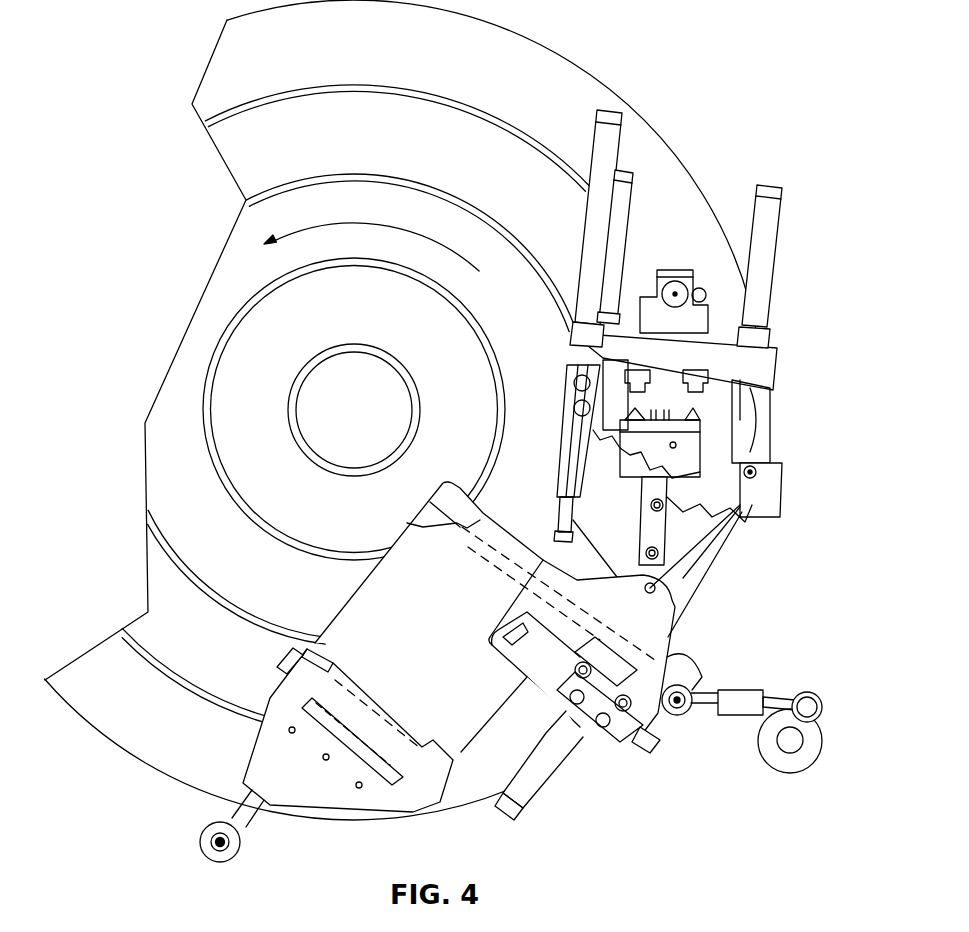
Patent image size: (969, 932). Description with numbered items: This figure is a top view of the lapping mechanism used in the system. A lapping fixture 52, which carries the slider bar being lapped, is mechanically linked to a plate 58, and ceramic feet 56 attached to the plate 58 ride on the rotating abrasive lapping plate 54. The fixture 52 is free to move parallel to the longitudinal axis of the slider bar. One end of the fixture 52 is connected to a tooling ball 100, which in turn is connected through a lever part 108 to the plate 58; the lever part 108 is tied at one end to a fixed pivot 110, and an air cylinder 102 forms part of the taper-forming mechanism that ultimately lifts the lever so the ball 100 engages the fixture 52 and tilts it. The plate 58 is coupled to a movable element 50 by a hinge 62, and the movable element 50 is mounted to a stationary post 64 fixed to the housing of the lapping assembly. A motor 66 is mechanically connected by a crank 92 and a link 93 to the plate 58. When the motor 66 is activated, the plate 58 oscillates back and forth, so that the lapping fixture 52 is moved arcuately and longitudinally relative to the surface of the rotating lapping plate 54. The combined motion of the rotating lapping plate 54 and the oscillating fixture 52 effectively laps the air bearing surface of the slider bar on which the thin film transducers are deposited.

The movable element 50 is at (303, 790).
The lapping fixture 52 is at (792, 413).
The abrasive lapping plate 54 is at (500, 37).
The ceramic feet 56 is at (460, 520).
The plate 58 is at (358, 607).
The hinge 62 is at (275, 660).
The stationary post 64 is at (203, 855).
The motor 66 is at (777, 757).
The crank 92 is at (818, 715).
The link rod 93 is at (747, 693).
The tooling ball 100 is at (660, 587).
The air cylinder 102 is at (537, 778).
The lever part 108 is at (663, 638).
The fixed pivot 110 is at (653, 742).